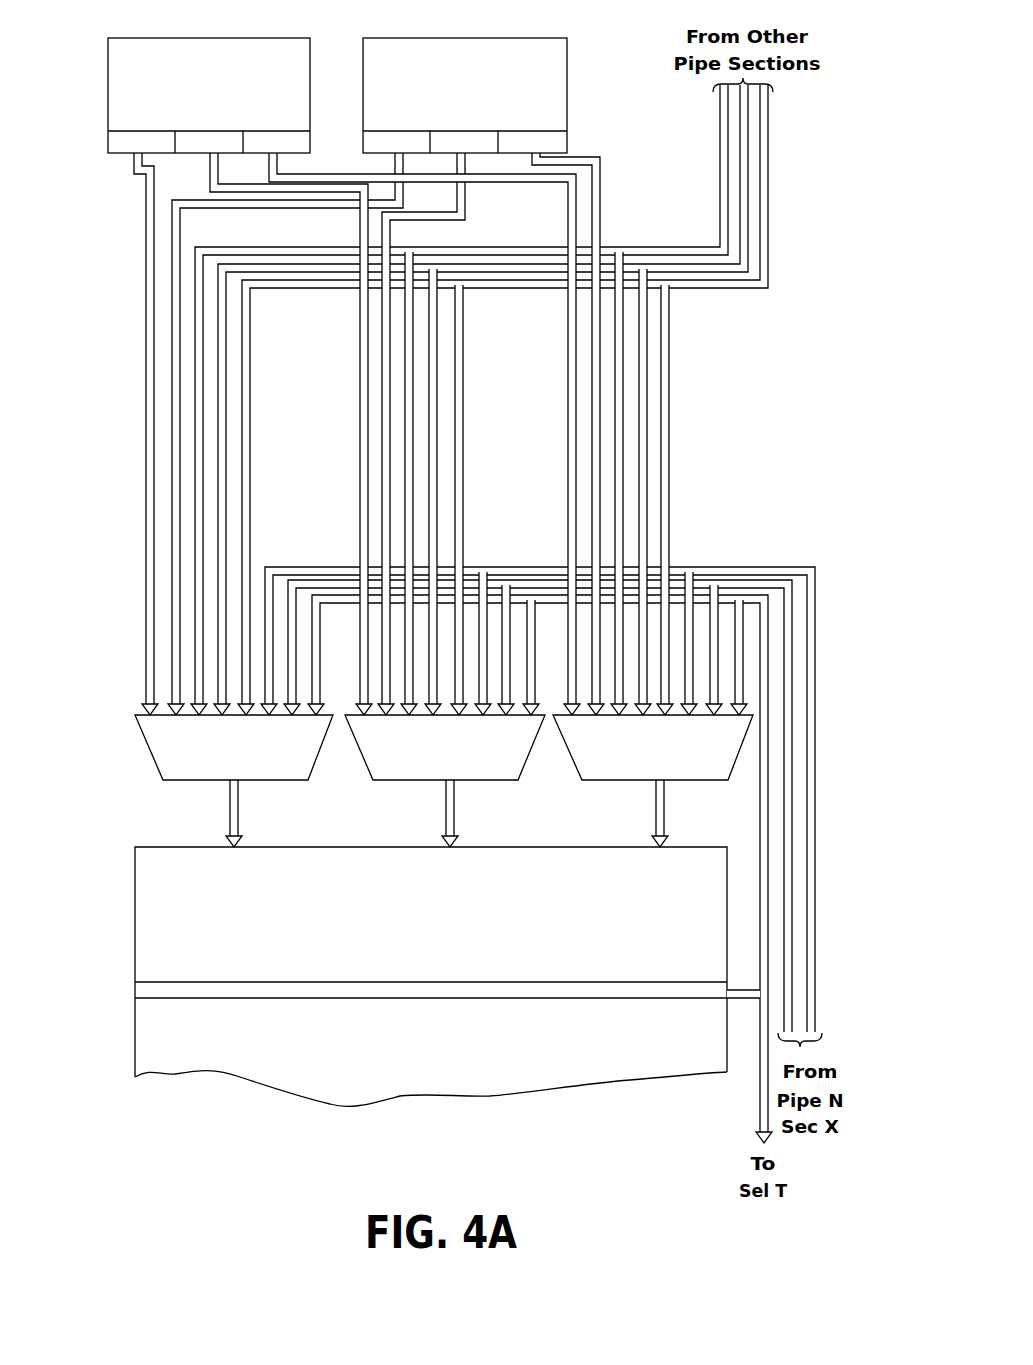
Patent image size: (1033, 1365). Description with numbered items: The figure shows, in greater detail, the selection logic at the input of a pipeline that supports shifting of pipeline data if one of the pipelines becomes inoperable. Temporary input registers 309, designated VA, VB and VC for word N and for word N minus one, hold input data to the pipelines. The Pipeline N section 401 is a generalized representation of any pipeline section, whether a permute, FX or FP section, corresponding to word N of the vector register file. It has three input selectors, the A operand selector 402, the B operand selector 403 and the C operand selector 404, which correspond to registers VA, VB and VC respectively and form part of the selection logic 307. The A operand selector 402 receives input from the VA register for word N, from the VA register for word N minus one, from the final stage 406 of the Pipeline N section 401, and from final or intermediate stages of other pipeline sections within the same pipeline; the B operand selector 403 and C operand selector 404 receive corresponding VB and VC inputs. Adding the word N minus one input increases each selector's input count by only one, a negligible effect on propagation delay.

The temporary input registers 309 is at (97, 38).
The selection logic 307 is at (414, 751).
The A operand selector 402 is at (279, 737).
The B operand selector 403 is at (490, 737).
The C operand selector 404 is at (698, 737).
The Pipeline N section 401 is at (676, 879).
The final stage 406 is at (447, 994).